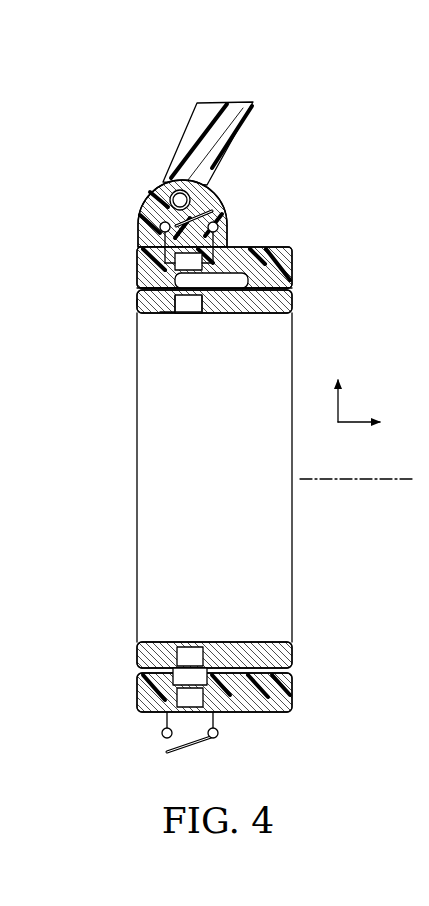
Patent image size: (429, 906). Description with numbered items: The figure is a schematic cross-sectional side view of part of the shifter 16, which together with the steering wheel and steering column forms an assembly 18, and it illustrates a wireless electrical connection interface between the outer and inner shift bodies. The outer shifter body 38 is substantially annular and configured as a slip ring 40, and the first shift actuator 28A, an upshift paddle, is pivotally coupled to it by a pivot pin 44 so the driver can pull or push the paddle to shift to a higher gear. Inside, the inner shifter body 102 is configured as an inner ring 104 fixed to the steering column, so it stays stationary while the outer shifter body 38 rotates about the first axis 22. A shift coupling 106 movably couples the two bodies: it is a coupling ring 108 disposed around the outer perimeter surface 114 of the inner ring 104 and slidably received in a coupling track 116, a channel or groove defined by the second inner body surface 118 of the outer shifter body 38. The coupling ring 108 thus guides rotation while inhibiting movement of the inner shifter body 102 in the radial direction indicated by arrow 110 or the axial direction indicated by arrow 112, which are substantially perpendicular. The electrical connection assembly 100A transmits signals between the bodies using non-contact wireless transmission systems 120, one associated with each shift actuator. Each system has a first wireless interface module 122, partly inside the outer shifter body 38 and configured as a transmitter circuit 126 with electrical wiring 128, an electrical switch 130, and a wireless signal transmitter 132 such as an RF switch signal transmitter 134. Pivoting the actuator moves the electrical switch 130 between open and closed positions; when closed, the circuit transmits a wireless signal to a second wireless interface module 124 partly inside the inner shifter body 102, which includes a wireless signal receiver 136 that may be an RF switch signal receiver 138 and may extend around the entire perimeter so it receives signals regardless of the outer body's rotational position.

The shifter 16 is at (190, 110).
The assembly 18 is at (113, 140).
The first axis 22 is at (360, 480).
The first shift actuator 28A is at (177, 145).
The outer shifter body 38 is at (292, 243).
The slip ring 40 is at (280, 243).
The pivot pin 44 is at (167, 173).
The electrical connection assembly 100A is at (120, 283).
The inner shifter body 102 is at (292, 300).
The inner ring 104 is at (132, 302).
The shift coupling 106 is at (245, 267).
The coupling ring 108 is at (240, 700).
The arrow 110 is at (340, 405).
The arrow 112 is at (355, 422).
The outer perimeter surface 114 is at (292, 285).
The coupling track 116 is at (257, 248).
The second inner body surface 118 is at (136, 287).
The non-contact wireless transmission system 120 is at (120, 300).
The first wireless interface module 122 is at (235, 268).
The second wireless interface module 124 is at (197, 308).
The transmitter circuit 126 is at (150, 236).
The electrical wiring 128 is at (222, 230).
The electrical switch 130 is at (210, 187).
The wireless signal transmitter 132 is at (160, 305).
The RF switch signal transmitter 134 is at (180, 295).
The wireless signal receiver 136 is at (187, 315).
The RF switch signal receiver 138 is at (205, 312).